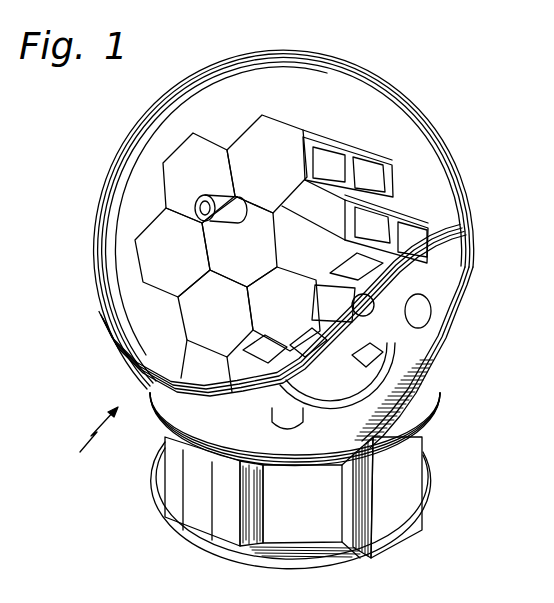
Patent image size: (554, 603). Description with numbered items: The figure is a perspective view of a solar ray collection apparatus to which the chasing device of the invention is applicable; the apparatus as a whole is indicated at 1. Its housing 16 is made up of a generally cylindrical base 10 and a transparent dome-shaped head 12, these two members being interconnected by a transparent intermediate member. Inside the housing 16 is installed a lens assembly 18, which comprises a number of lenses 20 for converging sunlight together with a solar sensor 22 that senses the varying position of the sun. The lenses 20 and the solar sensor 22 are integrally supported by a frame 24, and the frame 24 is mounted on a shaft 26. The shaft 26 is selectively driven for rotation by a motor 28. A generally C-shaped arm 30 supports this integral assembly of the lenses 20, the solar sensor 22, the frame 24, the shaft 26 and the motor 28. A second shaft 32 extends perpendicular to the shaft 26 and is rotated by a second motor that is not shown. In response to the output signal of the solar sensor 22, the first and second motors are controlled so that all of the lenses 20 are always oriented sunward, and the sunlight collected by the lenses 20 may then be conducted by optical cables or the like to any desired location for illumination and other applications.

The apparatus 1 is at (468, 276).
The base 10 is at (297, 537).
The head 12 is at (128, 155).
The housing 16 is at (87, 446).
The lens assembly 18 is at (98, 225).
The lenses 20 is at (182, 157).
The solar sensor 22 is at (222, 224).
The frame 24 is at (320, 130).
The shaft 26 is at (421, 402).
The motor 28 is at (429, 320).
The C-shaped arm 30 is at (264, 400).
The second shaft 32 is at (287, 434).